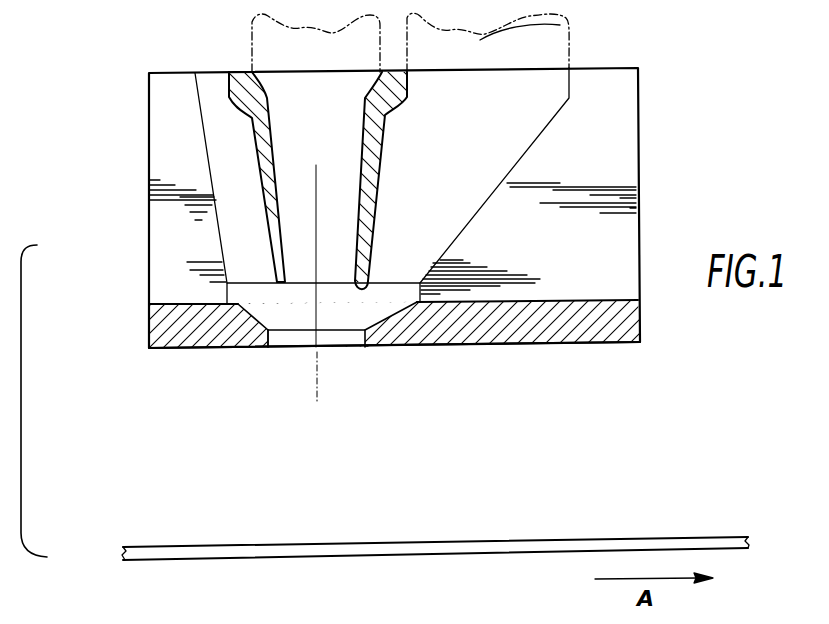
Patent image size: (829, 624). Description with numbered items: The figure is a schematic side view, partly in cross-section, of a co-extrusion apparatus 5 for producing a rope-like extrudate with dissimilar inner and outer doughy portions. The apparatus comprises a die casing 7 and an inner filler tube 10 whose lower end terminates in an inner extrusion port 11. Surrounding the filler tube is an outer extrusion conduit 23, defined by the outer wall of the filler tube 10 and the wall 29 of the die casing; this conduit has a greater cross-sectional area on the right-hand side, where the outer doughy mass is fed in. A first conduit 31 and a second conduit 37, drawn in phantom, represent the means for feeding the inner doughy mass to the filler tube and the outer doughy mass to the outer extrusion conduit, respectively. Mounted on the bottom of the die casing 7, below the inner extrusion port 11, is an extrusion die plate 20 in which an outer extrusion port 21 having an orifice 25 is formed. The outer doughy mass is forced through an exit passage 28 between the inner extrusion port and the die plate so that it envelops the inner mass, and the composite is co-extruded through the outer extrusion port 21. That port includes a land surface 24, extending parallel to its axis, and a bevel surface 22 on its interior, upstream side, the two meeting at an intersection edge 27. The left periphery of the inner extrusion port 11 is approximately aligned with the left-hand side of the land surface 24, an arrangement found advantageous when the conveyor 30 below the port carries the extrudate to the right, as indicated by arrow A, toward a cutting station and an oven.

The co-extrusion apparatus 5 is at (672, 84).
The die casing 7 is at (625, 180).
The inner filler tube 10 is at (257, 195).
The inner extrusion port 11 is at (372, 283).
The extrusion die plate 20 is at (566, 343).
The outer extrusion port 21 is at (267, 355).
The bevel surface 22 is at (266, 327).
The outer extrusion conduit 23 is at (489, 123).
The land surface 24 is at (270, 338).
The orifice 25 is at (360, 352).
The intersection edge 27 is at (366, 347).
The exit passage 28 is at (345, 306).
The wall 29 is at (200, 118).
The conveyor 30 is at (223, 556).
The first conduit 31 is at (252, 38).
The second conduit 37 is at (570, 42).